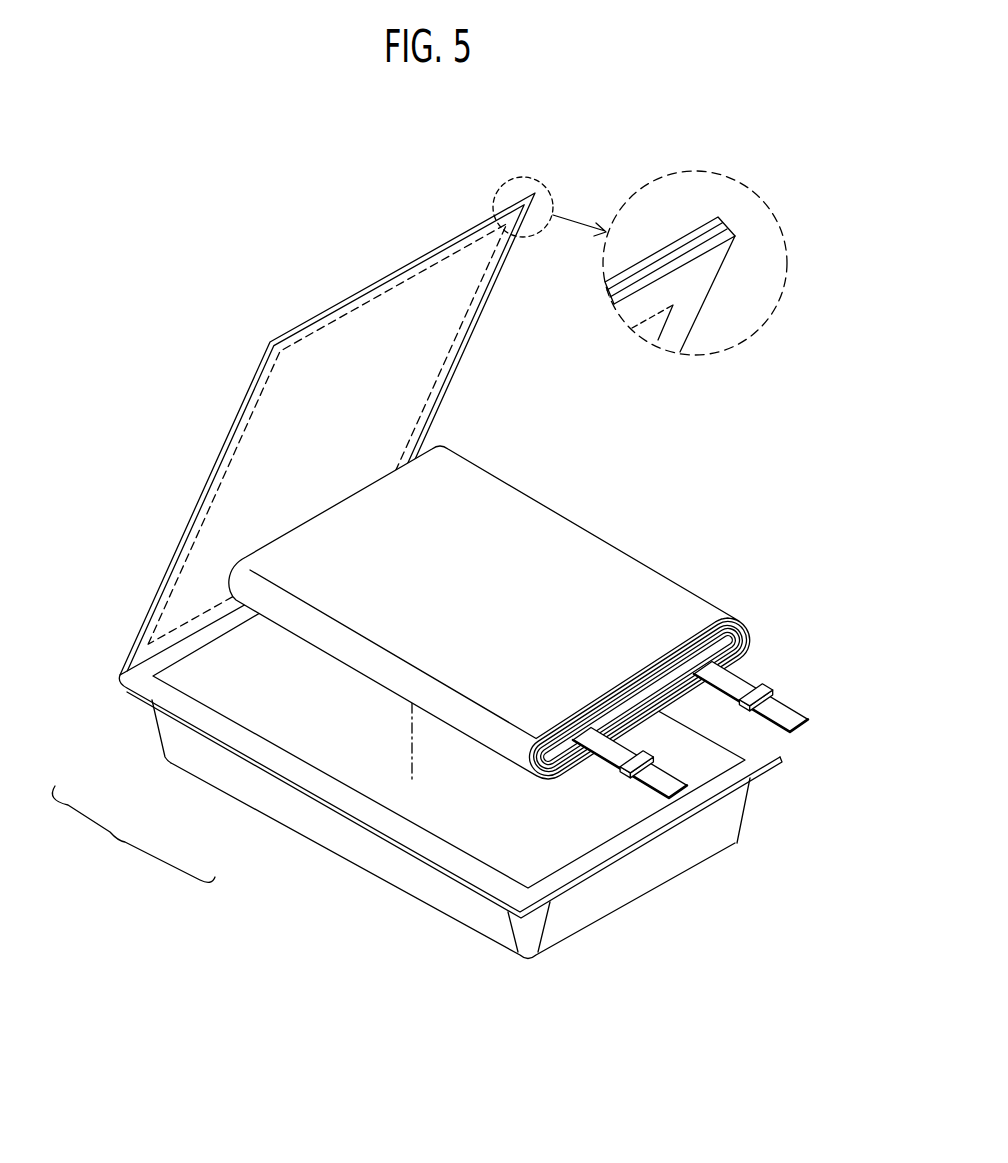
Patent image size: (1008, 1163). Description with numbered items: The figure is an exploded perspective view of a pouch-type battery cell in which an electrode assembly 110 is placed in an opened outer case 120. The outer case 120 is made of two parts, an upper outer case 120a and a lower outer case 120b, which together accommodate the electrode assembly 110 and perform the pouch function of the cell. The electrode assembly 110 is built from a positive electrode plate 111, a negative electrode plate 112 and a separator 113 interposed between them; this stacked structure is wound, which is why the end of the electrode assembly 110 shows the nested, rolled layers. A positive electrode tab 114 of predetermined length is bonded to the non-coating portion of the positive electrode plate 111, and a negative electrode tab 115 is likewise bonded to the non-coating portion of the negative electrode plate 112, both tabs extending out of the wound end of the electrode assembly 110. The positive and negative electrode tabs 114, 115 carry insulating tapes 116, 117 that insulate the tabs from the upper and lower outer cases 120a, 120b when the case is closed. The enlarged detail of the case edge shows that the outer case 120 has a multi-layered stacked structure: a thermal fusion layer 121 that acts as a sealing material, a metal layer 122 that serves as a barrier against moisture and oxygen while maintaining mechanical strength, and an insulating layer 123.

The electrode assembly 110 is at (588, 553).
The positive electrode plate 111 is at (717, 612).
The negative electrode plate 112 is at (750, 629).
The separator 113 is at (747, 622).
The positive electrode tab 114 is at (645, 760).
The negative electrode tab 115 is at (808, 720).
The insulating tape 116 is at (735, 790).
The insulating tape 117 is at (765, 689).
The outer case 120 is at (133, 834).
The upper outer case 120a is at (242, 803).
The lower outer case 120b is at (132, 630).
The thermal fusion layer 121 is at (716, 244).
The metal layer 122 is at (733, 224).
The insulating layer 123 is at (705, 232).